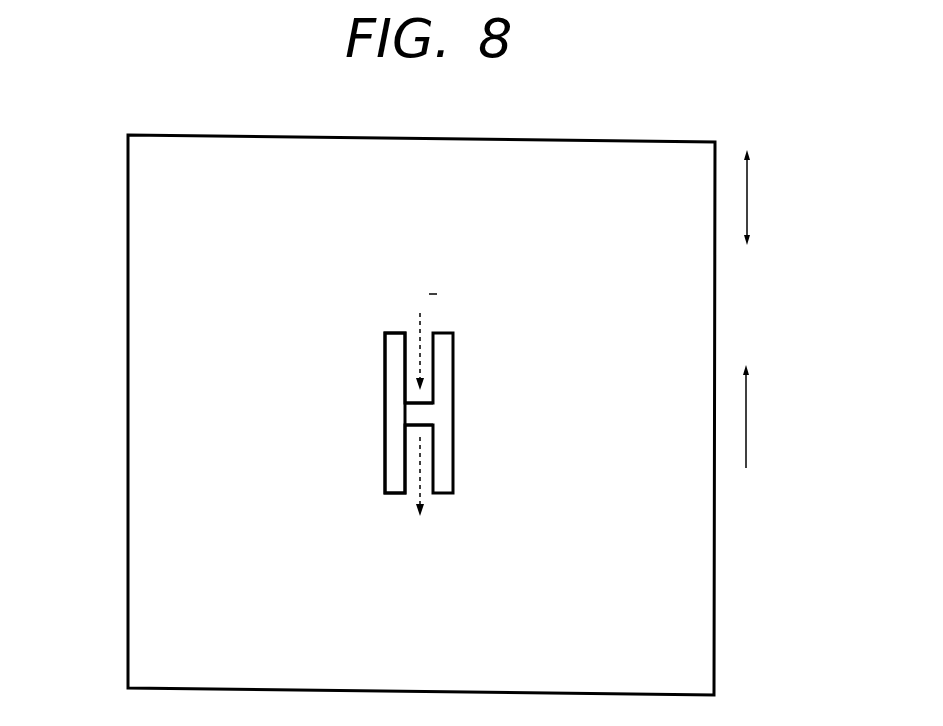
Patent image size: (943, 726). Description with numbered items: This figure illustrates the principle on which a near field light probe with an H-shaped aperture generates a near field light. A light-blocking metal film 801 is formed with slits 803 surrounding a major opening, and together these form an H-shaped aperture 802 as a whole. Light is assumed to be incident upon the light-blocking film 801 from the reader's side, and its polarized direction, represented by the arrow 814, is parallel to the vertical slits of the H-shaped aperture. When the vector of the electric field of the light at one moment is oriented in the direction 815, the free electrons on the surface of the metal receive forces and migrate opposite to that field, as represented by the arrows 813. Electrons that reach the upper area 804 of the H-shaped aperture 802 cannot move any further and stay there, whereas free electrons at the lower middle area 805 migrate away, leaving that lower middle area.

The light-blocking metal film 801 is at (175, 332).
The H-shaped aperture 802 is at (454, 433).
The slits 803 is at (383, 478).
The upper area 804 is at (422, 406).
The lower middle area 805 is at (405, 423).
The arrow representing movement of electrons 813 is at (427, 323).
The arrow representing polarized direction of incident light 814 is at (748, 198).
The direction of the electric field vector of light 815 is at (748, 440).